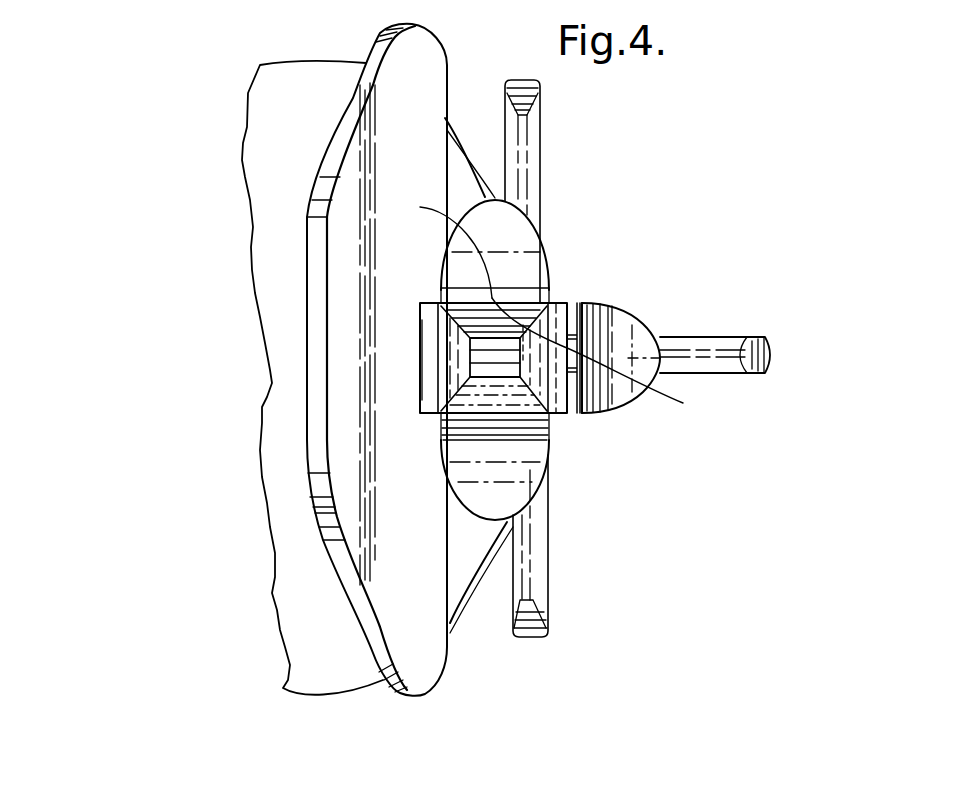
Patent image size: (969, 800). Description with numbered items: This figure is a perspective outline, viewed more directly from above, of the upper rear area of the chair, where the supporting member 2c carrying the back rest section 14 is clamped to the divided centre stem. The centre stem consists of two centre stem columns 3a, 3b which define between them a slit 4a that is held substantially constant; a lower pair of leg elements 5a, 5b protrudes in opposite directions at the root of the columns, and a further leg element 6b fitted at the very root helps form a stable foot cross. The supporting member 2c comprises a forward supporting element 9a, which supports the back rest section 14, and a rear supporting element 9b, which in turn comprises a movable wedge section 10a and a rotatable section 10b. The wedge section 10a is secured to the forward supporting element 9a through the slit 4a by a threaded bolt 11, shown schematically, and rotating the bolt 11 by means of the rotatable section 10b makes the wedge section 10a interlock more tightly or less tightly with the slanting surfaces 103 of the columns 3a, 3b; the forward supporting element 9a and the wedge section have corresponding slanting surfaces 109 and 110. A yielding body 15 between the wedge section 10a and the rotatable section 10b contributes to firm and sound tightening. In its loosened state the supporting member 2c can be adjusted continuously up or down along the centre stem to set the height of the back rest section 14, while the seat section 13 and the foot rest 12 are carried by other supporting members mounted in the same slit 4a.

The seat section 13 is at (303, 660).
The back rest section 14 is at (413, 672).
The foot rest 12 is at (503, 525).
The threaded bolt 11 is at (443, 247).
The slanting surface 109 is at (437, 327).
The forward supporting element 9a is at (440, 367).
The slit 4a is at (493, 370).
The centre stem column 3a is at (500, 217).
The centre stem column 3b is at (510, 485).
The leg element 5a is at (527, 140).
The leg element 5b is at (547, 583).
The slanting surfaces 103 is at (523, 325).
The movable wedge section 10a is at (557, 325).
The yielding body 15 is at (580, 410).
The supporting member 2c is at (620, 298).
The rotatable section 10b is at (640, 337).
The slanting surface 110 is at (610, 370).
The rear supporting element 9b is at (645, 415).
The leg element 6b is at (718, 363).